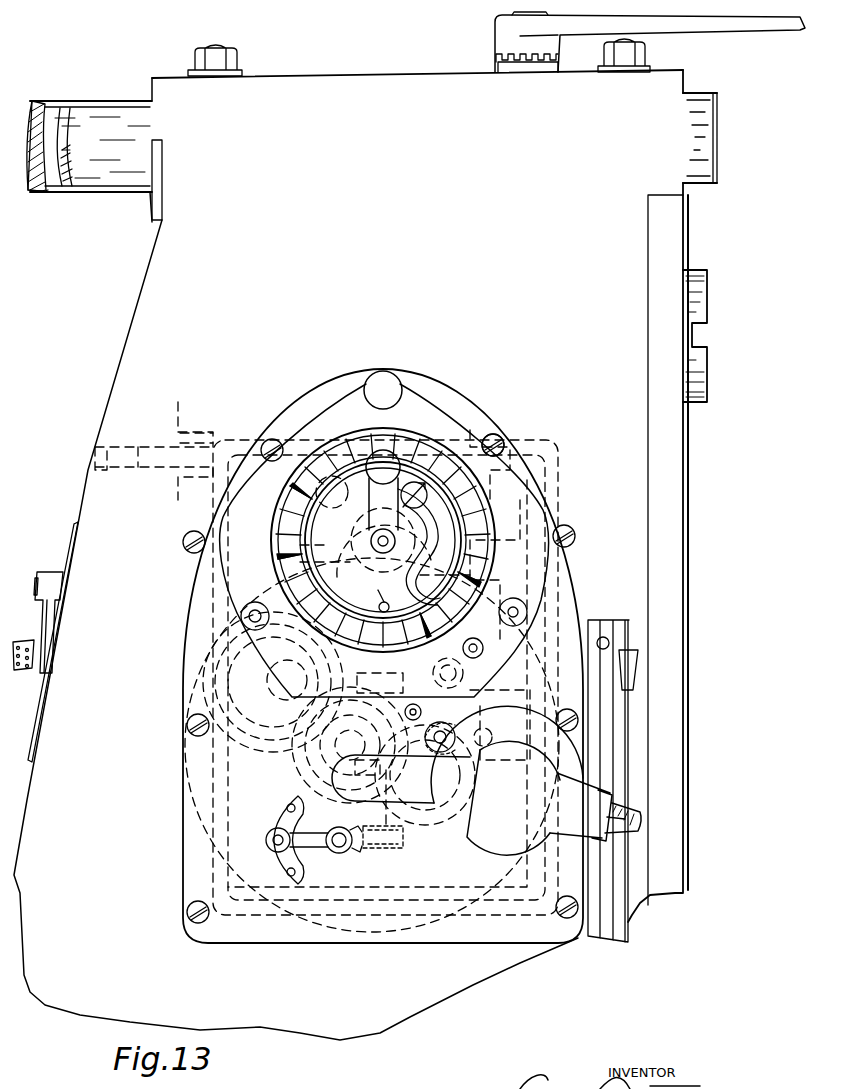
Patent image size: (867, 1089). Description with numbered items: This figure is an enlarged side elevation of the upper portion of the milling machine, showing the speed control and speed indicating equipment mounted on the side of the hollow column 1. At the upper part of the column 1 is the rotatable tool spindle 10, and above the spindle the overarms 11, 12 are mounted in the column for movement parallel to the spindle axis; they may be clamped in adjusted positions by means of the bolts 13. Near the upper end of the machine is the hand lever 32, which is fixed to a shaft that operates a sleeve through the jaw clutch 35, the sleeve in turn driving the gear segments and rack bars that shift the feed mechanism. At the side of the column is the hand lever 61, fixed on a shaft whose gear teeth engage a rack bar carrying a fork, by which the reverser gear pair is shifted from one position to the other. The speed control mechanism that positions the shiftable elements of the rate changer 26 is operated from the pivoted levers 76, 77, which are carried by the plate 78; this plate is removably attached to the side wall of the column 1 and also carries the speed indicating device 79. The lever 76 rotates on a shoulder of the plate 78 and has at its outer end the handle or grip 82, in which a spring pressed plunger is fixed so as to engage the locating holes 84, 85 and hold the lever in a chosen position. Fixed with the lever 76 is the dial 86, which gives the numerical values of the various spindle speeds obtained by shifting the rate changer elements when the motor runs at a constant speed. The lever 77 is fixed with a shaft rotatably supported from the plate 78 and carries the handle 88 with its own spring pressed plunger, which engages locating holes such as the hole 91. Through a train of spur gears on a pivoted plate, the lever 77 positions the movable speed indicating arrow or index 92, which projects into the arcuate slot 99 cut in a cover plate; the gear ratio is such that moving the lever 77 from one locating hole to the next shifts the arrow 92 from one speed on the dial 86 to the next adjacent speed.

The hollow column 1 is at (672, 544).
The tool spindle 10 is at (700, 304).
The overarm 11 is at (101, 184).
The overarm 12 is at (43, 192).
The bolt 13 is at (214, 51).
The rate changer 26 is at (300, 763).
The hand lever 32 is at (495, 38).
The jaw clutch 35 is at (495, 60).
The hand lever 61 is at (46, 613).
The pivoted lever 76 is at (408, 400).
The pivoted lever 77 is at (370, 508).
The plate 78 is at (578, 552).
The speed indicating device 79 is at (473, 452).
The handle 82 is at (392, 378).
The locating hole 84 is at (241, 619).
The locating hole 85 is at (522, 612).
The dial 86 is at (497, 436).
The handle 88 is at (372, 450).
The locating hole 91 is at (382, 602).
The speed indicating arrow 92 is at (424, 504).
The arcuate slot 99 is at (419, 547).